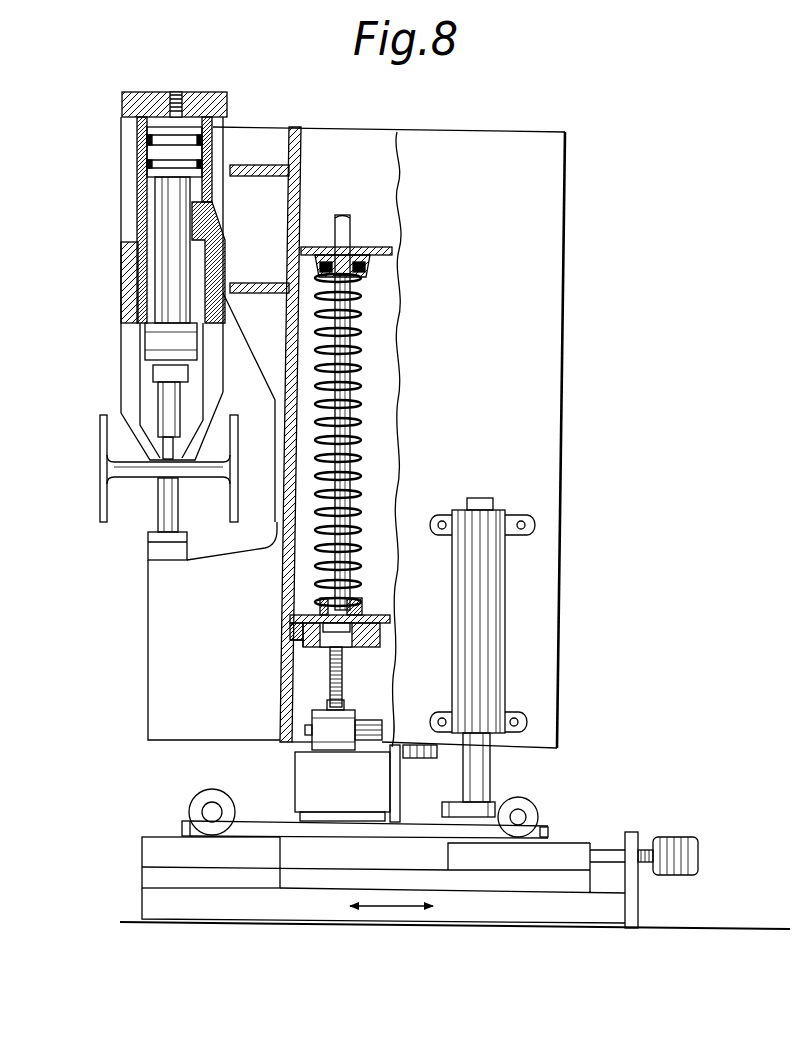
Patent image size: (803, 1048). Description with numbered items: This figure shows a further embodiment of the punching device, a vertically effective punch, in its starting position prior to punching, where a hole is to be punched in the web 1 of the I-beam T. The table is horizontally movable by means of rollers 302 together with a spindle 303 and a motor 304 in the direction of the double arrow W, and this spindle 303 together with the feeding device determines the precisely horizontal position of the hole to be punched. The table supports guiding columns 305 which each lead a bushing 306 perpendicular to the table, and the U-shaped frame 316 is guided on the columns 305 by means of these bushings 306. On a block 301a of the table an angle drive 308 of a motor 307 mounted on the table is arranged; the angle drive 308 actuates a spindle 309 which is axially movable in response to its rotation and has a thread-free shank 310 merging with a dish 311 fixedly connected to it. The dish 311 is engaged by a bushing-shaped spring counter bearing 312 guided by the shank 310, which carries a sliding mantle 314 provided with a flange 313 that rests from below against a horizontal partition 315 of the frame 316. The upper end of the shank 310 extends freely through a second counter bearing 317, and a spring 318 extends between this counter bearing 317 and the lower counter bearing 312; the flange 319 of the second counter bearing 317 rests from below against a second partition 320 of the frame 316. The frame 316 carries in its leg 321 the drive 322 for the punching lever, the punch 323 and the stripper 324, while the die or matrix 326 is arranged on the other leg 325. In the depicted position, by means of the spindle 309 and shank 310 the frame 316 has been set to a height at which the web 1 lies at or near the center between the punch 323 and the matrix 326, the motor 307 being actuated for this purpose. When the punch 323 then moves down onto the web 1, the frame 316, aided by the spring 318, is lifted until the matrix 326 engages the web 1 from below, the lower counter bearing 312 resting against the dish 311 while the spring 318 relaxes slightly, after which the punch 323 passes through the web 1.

The web 1 is at (135, 470).
The I-beam T is at (100, 450).
The block 301a is at (312, 774).
The rollers 302 is at (200, 806).
The spindle 303 is at (605, 855).
The motor 304 is at (688, 843).
The guiding columns 305 is at (480, 762).
The bushing 306 is at (500, 614).
The motor 307 is at (420, 758).
The angle drive 308 is at (312, 725).
The spindle 309 is at (345, 680).
The shank 310 is at (350, 470).
The dish 311 is at (293, 622).
The spring counter bearing 312 is at (360, 615).
The flange 313 is at (296, 642).
The sliding mantle 314 is at (370, 620).
The horizontal partition 315 is at (385, 630).
The frame 316 is at (562, 302).
The second counter bearing 317 is at (338, 240).
The spring 318 is at (360, 368).
The flange 319 is at (372, 265).
The second partition 320 is at (441, 219).
The leg 321 is at (229, 205).
The drive 322 is at (148, 170).
The punch 323 is at (165, 447).
The stripper 324 is at (158, 373).
The leg 325 is at (162, 633).
The die or matrix 326 is at (165, 510).
The double arrow W is at (395, 908).